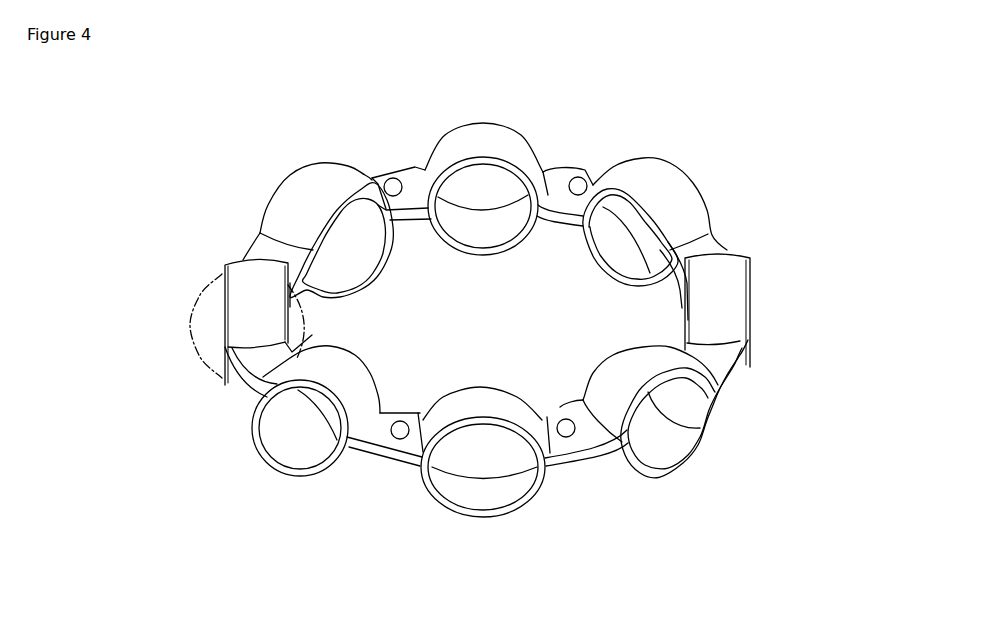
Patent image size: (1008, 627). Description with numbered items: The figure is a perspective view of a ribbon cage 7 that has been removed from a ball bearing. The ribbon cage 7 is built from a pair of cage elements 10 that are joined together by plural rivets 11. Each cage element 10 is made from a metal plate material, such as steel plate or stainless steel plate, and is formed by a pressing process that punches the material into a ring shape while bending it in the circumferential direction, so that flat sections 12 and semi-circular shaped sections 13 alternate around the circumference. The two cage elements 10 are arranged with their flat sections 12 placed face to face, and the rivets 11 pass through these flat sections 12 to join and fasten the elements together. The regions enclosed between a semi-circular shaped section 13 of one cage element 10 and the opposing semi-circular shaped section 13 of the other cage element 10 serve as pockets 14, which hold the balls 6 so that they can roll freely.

The ball 6 is at (190, 309).
The ribbon cage 7 is at (522, 100).
The cage element 10 is at (623, 381).
The rivet 11 is at (392, 180).
The flat section 12 is at (413, 172).
The semi-circular shaped section 13 is at (484, 140).
The pocket 14 is at (337, 263).